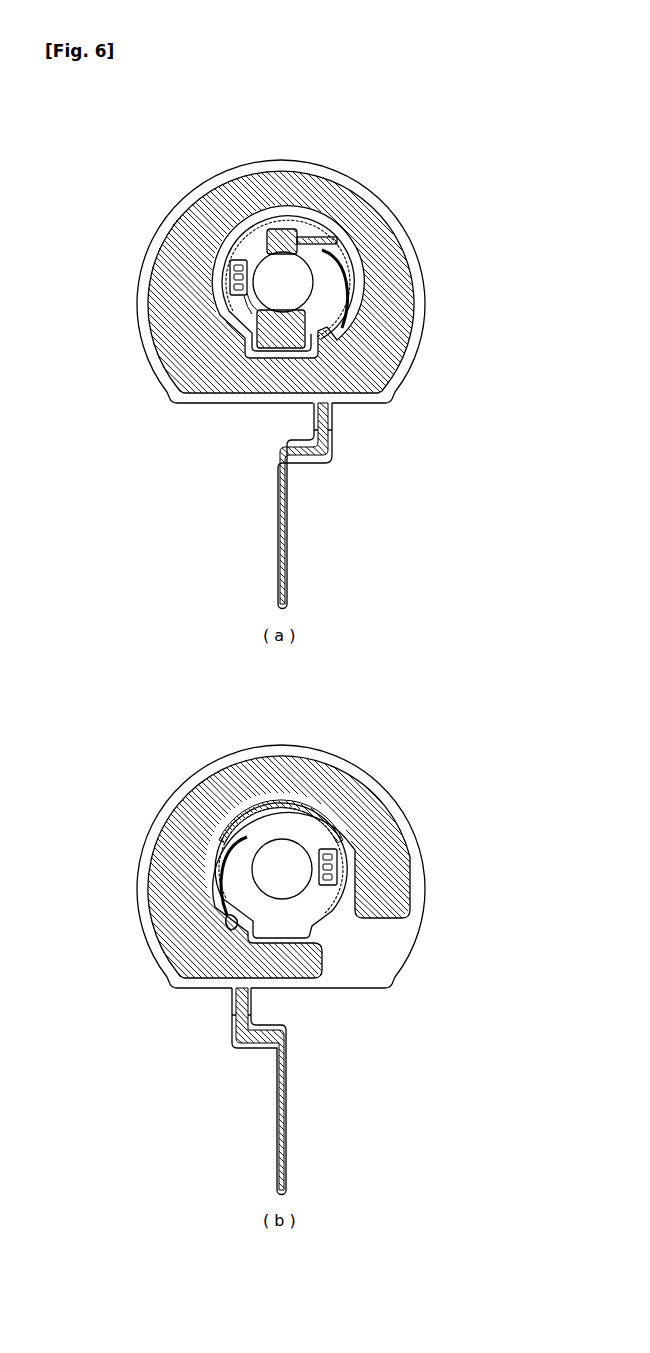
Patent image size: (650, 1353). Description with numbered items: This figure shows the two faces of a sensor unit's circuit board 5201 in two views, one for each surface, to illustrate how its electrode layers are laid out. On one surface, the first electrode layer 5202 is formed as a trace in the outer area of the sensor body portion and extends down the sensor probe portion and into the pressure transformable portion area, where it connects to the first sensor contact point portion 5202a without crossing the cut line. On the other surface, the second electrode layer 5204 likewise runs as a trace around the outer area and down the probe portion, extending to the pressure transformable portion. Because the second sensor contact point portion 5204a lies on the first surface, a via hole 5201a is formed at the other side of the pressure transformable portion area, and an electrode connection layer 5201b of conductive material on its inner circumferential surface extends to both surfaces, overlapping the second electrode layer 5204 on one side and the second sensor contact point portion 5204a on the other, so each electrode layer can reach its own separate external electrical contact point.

The circuit board 5201 is at (233, 168).
The via hole 5201a is at (217, 270).
The electrode connection layer 5201b is at (229, 289).
The first electrode layer 5202 is at (205, 201).
The first sensor contact point portion 5202a is at (287, 224).
The second electrode layer 5204 is at (332, 778).
The second sensor contact point portion 5204a is at (265, 350).